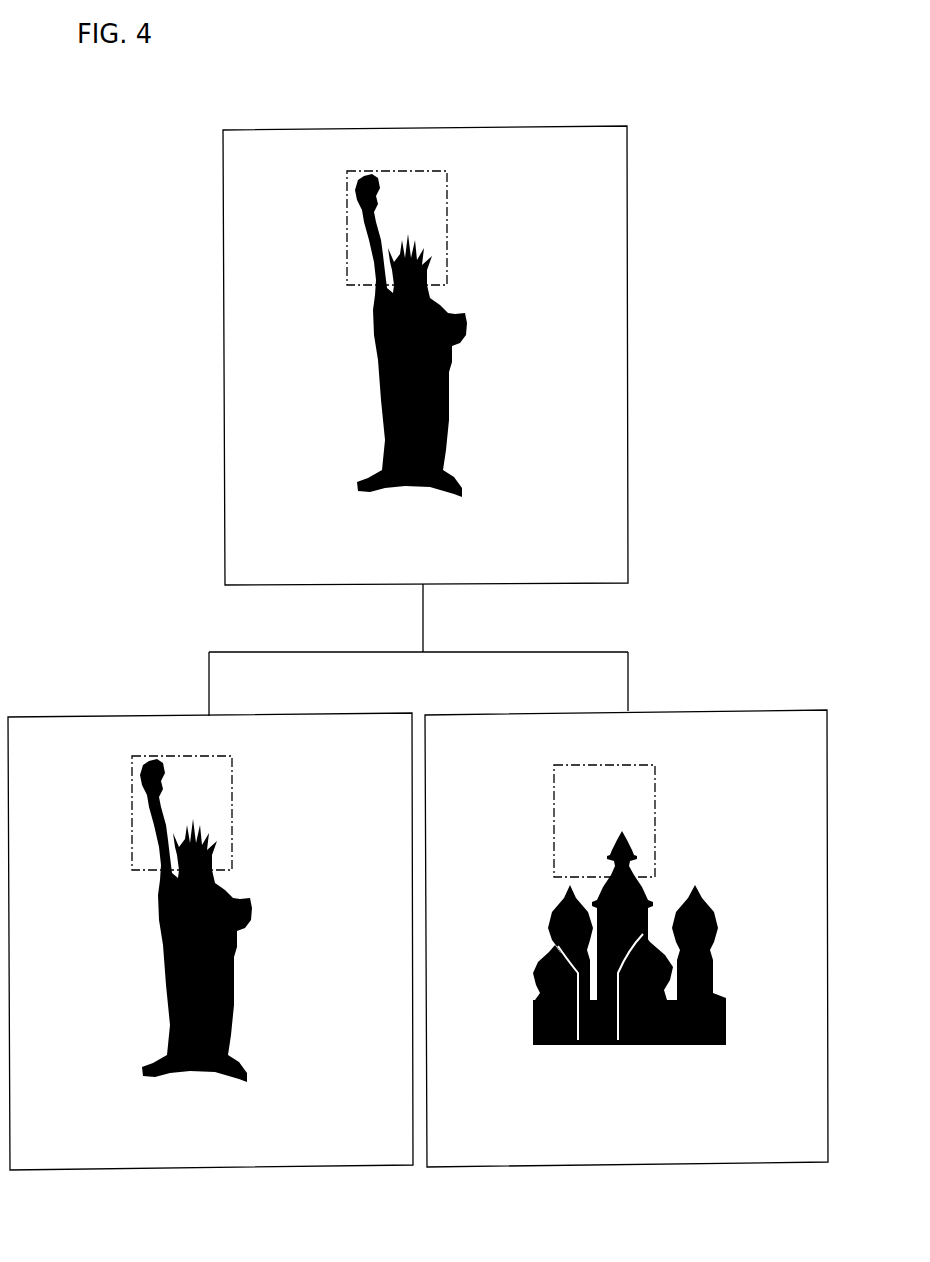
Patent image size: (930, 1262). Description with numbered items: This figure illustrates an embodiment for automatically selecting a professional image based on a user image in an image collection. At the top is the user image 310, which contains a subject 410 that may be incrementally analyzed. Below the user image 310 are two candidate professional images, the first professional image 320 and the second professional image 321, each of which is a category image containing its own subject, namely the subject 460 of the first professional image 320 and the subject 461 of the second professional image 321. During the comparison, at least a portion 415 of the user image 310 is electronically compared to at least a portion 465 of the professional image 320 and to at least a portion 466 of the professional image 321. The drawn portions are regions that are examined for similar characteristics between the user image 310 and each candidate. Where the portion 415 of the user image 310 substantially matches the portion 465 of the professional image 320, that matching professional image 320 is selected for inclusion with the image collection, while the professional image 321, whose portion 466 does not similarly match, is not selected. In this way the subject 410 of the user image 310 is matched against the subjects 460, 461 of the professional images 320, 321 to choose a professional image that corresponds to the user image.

The user image 310 is at (587, 127).
The professional image 320 is at (63, 716).
The professional image 321 is at (772, 711).
The subject 410 is at (465, 317).
The portion of the user image 415 is at (447, 213).
The subject 460 is at (250, 899).
The subject 461 is at (710, 906).
The portion of the professional image 465 is at (232, 795).
The portion of the professional image 466 is at (655, 805).